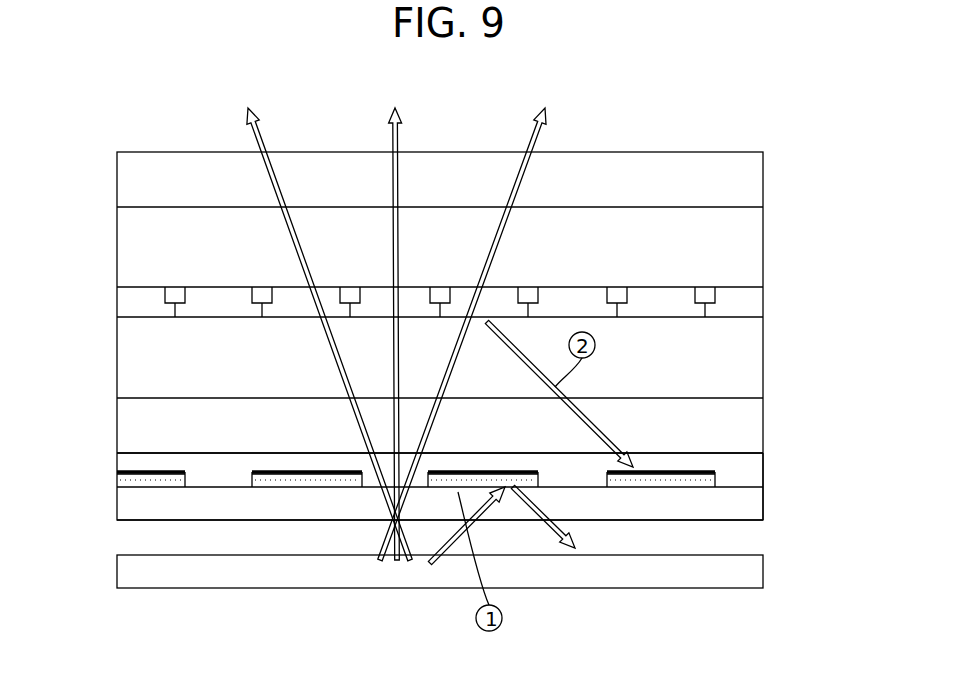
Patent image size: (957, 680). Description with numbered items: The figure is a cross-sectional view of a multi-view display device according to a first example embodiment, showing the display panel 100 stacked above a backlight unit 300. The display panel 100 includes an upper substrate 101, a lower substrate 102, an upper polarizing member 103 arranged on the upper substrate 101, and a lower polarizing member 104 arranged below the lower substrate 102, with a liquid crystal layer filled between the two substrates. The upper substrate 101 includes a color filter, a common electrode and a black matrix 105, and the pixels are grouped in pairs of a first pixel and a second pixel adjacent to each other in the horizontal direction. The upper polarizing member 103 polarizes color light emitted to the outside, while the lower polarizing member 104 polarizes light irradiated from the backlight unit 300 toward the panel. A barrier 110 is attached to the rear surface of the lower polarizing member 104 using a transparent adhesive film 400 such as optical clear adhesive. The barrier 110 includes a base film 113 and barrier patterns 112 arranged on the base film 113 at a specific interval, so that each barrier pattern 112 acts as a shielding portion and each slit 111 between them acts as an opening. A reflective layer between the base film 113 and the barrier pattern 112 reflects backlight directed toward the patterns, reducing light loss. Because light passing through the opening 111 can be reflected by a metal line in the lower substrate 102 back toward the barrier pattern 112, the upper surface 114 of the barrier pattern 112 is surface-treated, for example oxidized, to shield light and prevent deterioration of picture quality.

The display panel 100 is at (717, 93).
The upper substrate 101 is at (753, 247).
The lower substrate 102 is at (750, 368).
The upper polarizing member 103 is at (753, 178).
The lower polarizing member 104 is at (750, 422).
The black matrix 105 is at (712, 297).
The barrier 110 is at (836, 470).
The slit 111 is at (213, 478).
The barrier pattern 112 is at (715, 477).
The base film 113 is at (752, 497).
The upper surface of the barrier pattern 114 is at (133, 471).
The backlight unit 300 is at (752, 574).
The transparent adhesive film 400 is at (752, 462).